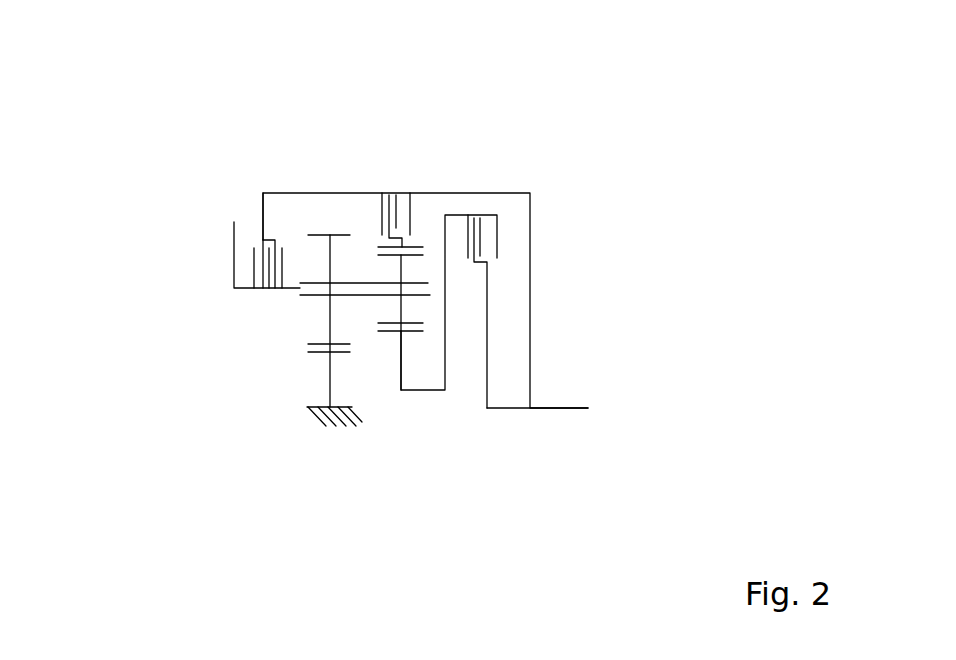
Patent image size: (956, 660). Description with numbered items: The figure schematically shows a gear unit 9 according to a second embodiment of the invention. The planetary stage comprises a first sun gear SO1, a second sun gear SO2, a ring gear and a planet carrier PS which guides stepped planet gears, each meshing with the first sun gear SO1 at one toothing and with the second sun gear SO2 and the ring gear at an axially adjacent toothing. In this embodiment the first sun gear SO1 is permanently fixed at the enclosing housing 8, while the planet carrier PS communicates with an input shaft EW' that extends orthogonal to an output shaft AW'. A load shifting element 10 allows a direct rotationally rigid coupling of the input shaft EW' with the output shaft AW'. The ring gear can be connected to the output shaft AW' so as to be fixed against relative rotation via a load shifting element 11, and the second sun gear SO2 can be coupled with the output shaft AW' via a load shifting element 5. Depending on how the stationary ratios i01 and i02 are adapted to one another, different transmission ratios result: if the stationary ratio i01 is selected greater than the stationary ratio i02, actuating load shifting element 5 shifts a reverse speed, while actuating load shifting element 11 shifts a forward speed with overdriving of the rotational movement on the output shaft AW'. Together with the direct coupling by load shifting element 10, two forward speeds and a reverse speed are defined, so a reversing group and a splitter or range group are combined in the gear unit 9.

The load shifting element 5 is at (482, 212).
The housing 8 is at (338, 427).
The gear unit 9 is at (197, 138).
The load shifting element 10 is at (266, 293).
The load shifting element 11 is at (397, 187).
The input shaft EW' is at (186, 252).
The output shaft AW' is at (602, 390).
The planet carrier PS is at (295, 290).
The first sun gear SO1 is at (328, 378).
The second sun gear SO2 is at (402, 366).
The stationary ratio i01 is at (353, 122).
The stationary ratio i02 is at (425, 122).